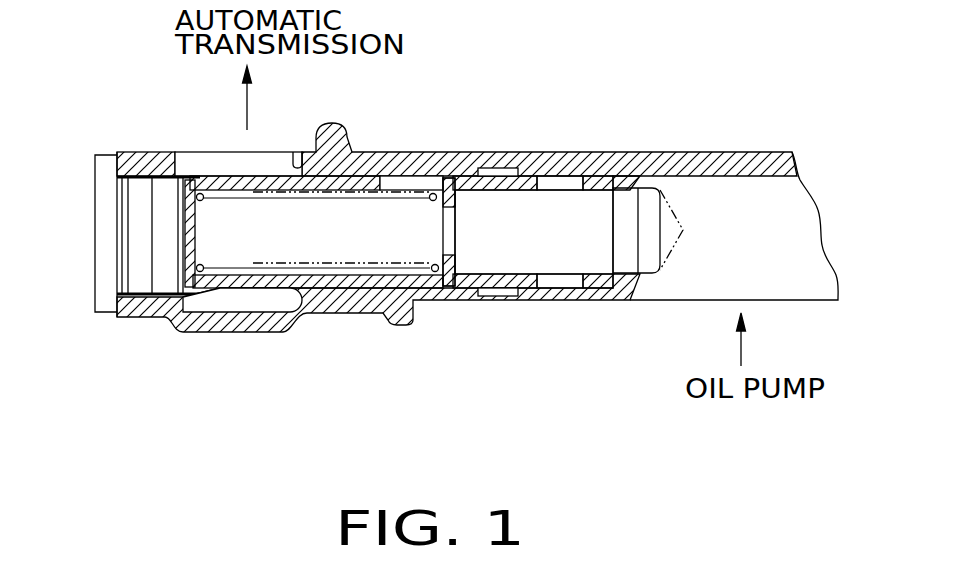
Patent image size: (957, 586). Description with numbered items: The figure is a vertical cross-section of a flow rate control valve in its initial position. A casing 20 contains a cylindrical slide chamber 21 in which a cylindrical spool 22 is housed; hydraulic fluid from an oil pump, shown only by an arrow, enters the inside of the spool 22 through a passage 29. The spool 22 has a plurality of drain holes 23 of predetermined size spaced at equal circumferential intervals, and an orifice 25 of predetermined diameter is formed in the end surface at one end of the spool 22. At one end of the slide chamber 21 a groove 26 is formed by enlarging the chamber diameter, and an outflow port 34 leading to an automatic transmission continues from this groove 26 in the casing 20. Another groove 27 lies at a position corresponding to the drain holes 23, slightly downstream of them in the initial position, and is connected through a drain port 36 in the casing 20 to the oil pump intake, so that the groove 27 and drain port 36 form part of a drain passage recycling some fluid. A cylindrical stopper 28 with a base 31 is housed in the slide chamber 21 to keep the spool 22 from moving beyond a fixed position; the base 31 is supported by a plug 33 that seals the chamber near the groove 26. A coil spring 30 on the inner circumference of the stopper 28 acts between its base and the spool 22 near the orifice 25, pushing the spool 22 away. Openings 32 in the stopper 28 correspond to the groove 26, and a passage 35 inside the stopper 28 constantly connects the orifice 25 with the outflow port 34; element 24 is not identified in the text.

The casing 20 is at (175, 315).
The slide chamber 21 is at (534, 232).
The spool 22 is at (463, 176).
The drain holes 23 is at (555, 292).
The retainer cup 24 is at (438, 302).
The orifice 25 is at (447, 237).
The groove 26 is at (255, 298).
The groove 27 is at (512, 168).
The stopper 28 is at (368, 176).
The passage 29 is at (633, 182).
The coil spring 30 is at (447, 152).
The base 31 is at (190, 227).
The openings 32 is at (250, 187).
The plug 33 is at (133, 268).
The outflow port 34 is at (294, 158).
The passage 35 is at (333, 257).
The drain port 36 is at (488, 302).